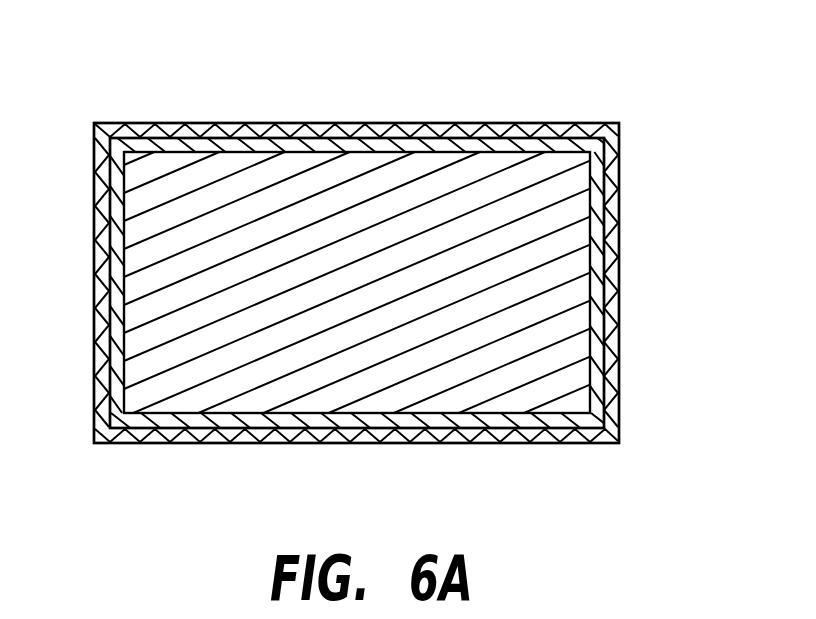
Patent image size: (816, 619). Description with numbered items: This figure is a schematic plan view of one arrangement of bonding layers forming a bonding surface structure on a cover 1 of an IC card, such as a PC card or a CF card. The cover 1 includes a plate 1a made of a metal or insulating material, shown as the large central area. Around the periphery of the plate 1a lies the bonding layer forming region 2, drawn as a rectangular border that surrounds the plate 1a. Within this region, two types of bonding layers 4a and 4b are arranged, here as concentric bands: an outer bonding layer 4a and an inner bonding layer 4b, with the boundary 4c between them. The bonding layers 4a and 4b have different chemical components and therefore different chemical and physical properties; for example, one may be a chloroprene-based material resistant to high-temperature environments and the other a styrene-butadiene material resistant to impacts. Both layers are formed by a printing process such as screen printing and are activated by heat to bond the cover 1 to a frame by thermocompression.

The cover 1 is at (472, 70).
The plate 1a is at (555, 325).
The bonding layer forming region 2 is at (620, 283).
The bonding layer 4a is at (123, 128).
The bonding layer 4b is at (198, 128).
The interface layer 4c is at (110, 160).